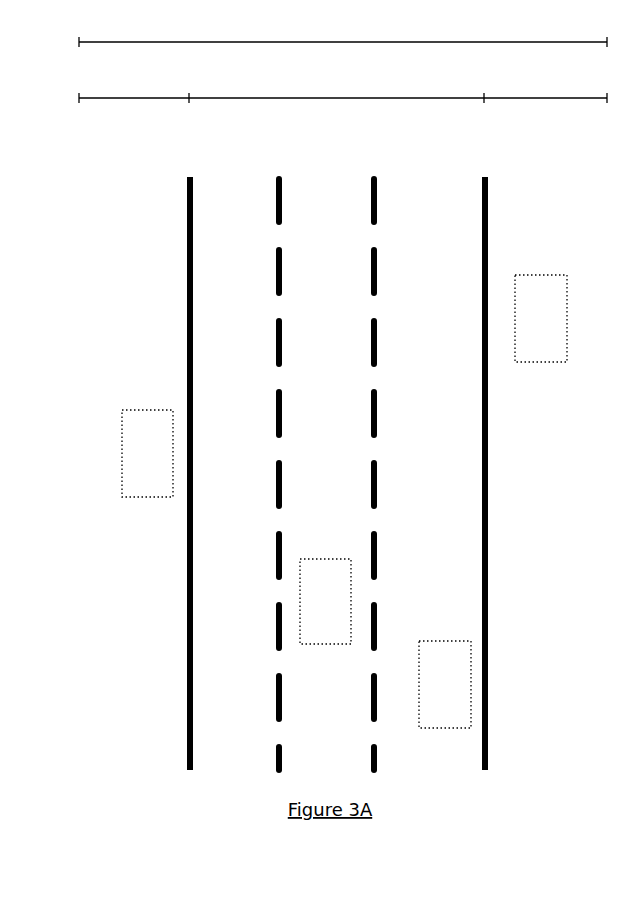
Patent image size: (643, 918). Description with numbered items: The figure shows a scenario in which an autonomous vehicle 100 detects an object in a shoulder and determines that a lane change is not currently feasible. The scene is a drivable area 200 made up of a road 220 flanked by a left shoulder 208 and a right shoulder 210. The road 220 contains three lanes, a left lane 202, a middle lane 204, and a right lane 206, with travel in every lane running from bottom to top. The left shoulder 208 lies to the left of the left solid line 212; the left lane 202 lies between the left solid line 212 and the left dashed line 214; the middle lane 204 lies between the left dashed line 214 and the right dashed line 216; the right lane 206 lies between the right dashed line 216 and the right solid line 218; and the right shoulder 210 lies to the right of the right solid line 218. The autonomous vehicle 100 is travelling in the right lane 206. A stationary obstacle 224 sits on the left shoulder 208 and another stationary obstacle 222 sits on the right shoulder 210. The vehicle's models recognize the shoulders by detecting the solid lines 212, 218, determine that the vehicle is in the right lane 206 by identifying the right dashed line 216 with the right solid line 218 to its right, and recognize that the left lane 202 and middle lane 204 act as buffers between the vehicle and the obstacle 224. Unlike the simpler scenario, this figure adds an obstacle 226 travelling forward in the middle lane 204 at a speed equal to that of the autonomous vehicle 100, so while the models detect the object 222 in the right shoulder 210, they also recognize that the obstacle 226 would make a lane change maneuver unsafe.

The autonomous vehicle 100 is at (445, 729).
The drivable area 200 is at (343, 33).
The left lane 202 is at (234, 298).
The middle lane 204 is at (321, 298).
The right lane 206 is at (426, 298).
The left shoulder 208 is at (134, 89).
The right shoulder 210 is at (545, 89).
The left solid line 212 is at (188, 198).
The left dashed line 214 is at (277, 203).
The right dashed line 216 is at (372, 203).
The right solid line 218 is at (483, 210).
The road 220 is at (336, 89).
The stationary obstacle 222 is at (540, 363).
The stationary obstacle 224 is at (147, 498).
The obstacle 226 is at (326, 645).